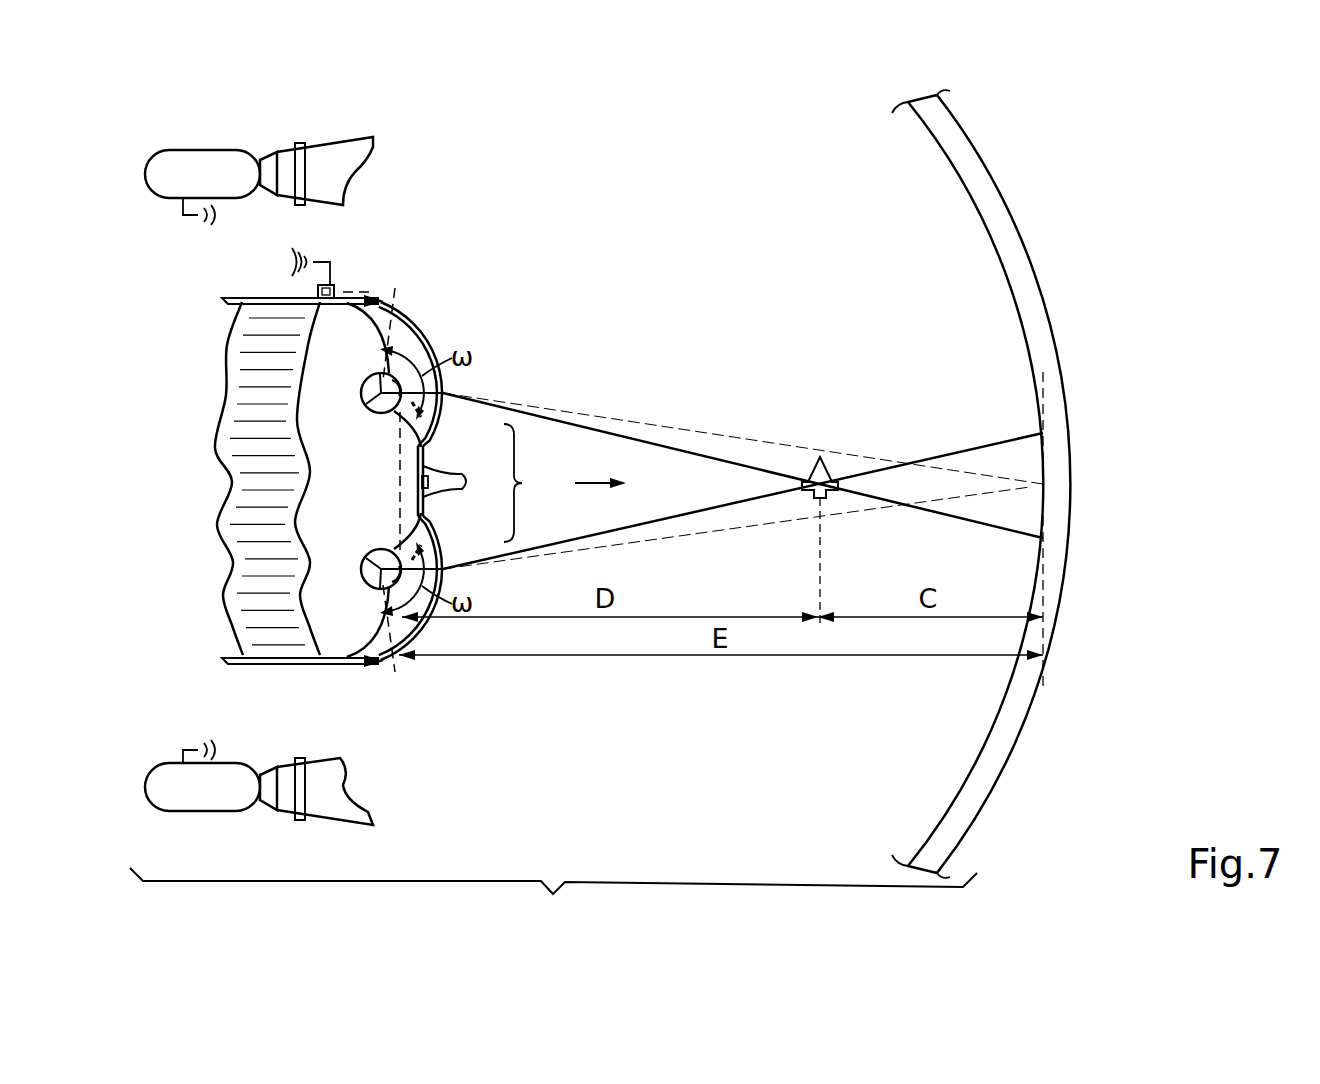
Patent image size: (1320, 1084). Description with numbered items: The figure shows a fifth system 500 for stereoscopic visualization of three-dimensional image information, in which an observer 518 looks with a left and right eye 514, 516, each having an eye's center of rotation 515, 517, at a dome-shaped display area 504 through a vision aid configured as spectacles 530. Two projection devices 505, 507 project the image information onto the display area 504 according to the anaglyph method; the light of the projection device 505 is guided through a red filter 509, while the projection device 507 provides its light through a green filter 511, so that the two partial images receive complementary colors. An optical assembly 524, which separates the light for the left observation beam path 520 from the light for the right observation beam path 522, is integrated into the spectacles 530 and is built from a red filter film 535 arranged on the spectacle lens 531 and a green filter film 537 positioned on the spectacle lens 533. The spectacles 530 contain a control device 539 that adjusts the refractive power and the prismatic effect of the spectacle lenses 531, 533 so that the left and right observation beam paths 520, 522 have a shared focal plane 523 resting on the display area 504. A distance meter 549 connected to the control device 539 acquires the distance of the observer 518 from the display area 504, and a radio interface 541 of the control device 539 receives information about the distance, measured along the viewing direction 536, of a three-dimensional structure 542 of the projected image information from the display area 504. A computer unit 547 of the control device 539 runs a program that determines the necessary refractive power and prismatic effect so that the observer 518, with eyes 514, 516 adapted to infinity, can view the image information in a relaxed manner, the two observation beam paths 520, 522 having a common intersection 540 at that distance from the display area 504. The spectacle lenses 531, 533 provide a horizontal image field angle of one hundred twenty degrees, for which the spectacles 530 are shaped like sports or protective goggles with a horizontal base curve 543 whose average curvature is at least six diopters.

The fifth system 500 is at (1160, 155).
The display area 504 is at (948, 160).
The projection device 505 is at (205, 150).
The projection device 507 is at (200, 812).
The red filter 509 is at (302, 143).
The green filter 511 is at (300, 820).
The eye 514 is at (372, 378).
The eye's center of rotation 515 is at (378, 408).
The eye 516 is at (380, 591).
The eye's center of rotation 517 is at (374, 553).
The observer 518 is at (230, 448).
The observation beam path 520 is at (672, 448).
The observation beam path 522 is at (672, 520).
The focal plane 523 is at (1046, 389).
The optical assembly 524 is at (538, 483).
The spectacles 530 is at (248, 665).
The spectacle lens 531 is at (428, 340).
The spectacle lens 533 is at (428, 648).
The red filter film 535 is at (440, 430).
The direction 536 is at (598, 465).
The green filter film 537 is at (440, 530).
The control device 539 is at (345, 290).
The intersection 540 is at (826, 472).
The radio interface 541 is at (330, 262).
The three-dimensional structure 542 is at (832, 498).
The base curve 543 is at (372, 292).
The computer unit 547 is at (318, 291).
The distance meter 549 is at (418, 482).